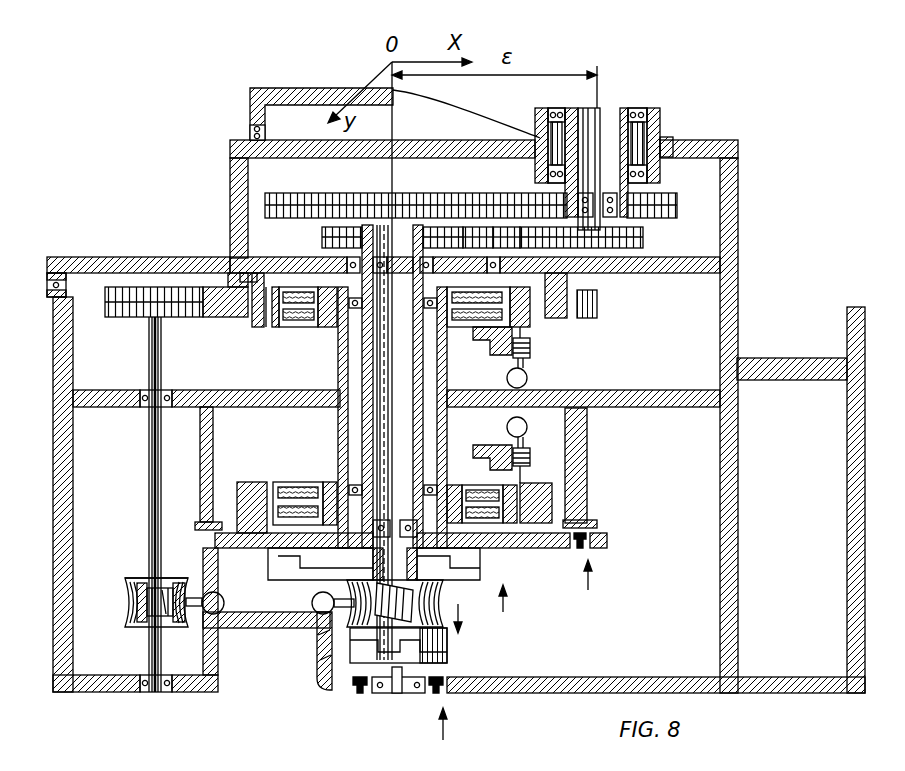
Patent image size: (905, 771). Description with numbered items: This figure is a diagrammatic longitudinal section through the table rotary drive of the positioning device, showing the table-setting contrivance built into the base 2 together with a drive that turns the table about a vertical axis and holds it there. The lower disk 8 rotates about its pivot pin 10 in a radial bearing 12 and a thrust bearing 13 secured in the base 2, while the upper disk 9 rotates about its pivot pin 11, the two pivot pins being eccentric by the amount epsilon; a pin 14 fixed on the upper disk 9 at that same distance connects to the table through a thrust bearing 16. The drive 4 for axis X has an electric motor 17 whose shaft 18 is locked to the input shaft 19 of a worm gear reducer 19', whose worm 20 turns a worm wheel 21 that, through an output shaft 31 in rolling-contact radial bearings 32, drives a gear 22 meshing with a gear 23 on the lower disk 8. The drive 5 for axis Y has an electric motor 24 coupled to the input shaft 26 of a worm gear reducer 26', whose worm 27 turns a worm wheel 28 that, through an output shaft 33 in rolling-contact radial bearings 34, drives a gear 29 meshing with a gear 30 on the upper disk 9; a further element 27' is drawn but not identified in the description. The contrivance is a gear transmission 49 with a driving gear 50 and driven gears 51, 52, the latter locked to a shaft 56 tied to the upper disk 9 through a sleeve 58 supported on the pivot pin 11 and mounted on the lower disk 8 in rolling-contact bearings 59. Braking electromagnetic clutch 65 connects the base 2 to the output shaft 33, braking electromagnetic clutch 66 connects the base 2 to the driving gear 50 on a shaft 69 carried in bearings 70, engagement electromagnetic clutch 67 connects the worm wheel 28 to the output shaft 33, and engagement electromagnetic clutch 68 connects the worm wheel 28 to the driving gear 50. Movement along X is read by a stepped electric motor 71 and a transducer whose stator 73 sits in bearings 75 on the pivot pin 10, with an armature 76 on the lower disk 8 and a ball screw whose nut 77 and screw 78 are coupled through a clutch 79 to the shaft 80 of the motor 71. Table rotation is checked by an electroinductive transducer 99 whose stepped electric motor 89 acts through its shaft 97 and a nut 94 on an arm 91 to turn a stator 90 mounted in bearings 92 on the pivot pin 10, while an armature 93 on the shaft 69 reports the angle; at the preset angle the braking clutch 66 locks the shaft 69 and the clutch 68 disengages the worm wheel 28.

The base 2 is at (762, 693).
The drive 4 is at (198, 622).
The drive 5 is at (330, 692).
The lower disk 8 is at (64, 262).
The upper disk 9 is at (263, 90).
The pivot pin 10 is at (340, 432).
The pivot pin 11 is at (540, 112).
The radial bearing 12 is at (348, 258).
The thrust bearing 13 is at (67, 288).
The pin 14 is at (597, 125).
The thrust bearing 16 is at (250, 130).
The electric motor 17 is at (225, 601).
The shaft 18 is at (201, 597).
The input shaft 19 is at (158, 561).
The worm gear reducer 19' is at (178, 589).
The worm 20 is at (140, 601).
The worm wheel 21 is at (134, 579).
The gear 22 is at (140, 290).
The gear 23 is at (208, 290).
The electric motor 24 is at (311, 601).
The input shaft 26 is at (374, 551).
The worm gear reducer 26' is at (305, 669).
The worm 27 is at (420, 603).
The gear step 27' is at (305, 645).
The worm wheel 28 is at (348, 663).
The gear 29 is at (297, 198).
The gear 30 is at (675, 210).
The output shaft 31 is at (150, 466).
The rolling-contact radial bearings 32 is at (166, 392).
The output shaft 33 is at (392, 228).
The rolling-contact radial bearings 34 is at (342, 228).
The gear transmission 49 is at (464, 230).
The driving gear 50 is at (436, 228).
The driven gear 51 is at (492, 234).
The driven gear 52 is at (643, 238).
The shaft 56 is at (652, 128).
The sleeve 58 is at (664, 155).
The rolling-contact bearings 59 is at (637, 112).
The braking electromagnetic clutch 65 is at (456, 717).
The braking electromagnetic clutch 66 is at (578, 561).
The engagement electromagnetic clutch 67 is at (466, 637).
The engagement electromagnetic clutch 68 is at (512, 607).
The shaft 69 is at (368, 355).
The bearings 70 is at (442, 483).
The stepped electric motor 71 is at (528, 382).
The stator 73 is at (297, 328).
The bearings 75 is at (455, 328).
The armature 76 is at (257, 328).
The nut 77 is at (532, 349).
The screw 78 is at (528, 345).
The clutch 79 is at (528, 377).
The shaft 80 is at (510, 366).
The stepped electric motor 89 is at (528, 429).
The stator 90 is at (514, 444).
The arm 91 is at (478, 447).
The bearings 92 is at (320, 483).
The armature 93 is at (250, 485).
The nut 94 is at (522, 452).
The shaft 97 is at (531, 451).
The electroinductive transducer 99 is at (512, 462).